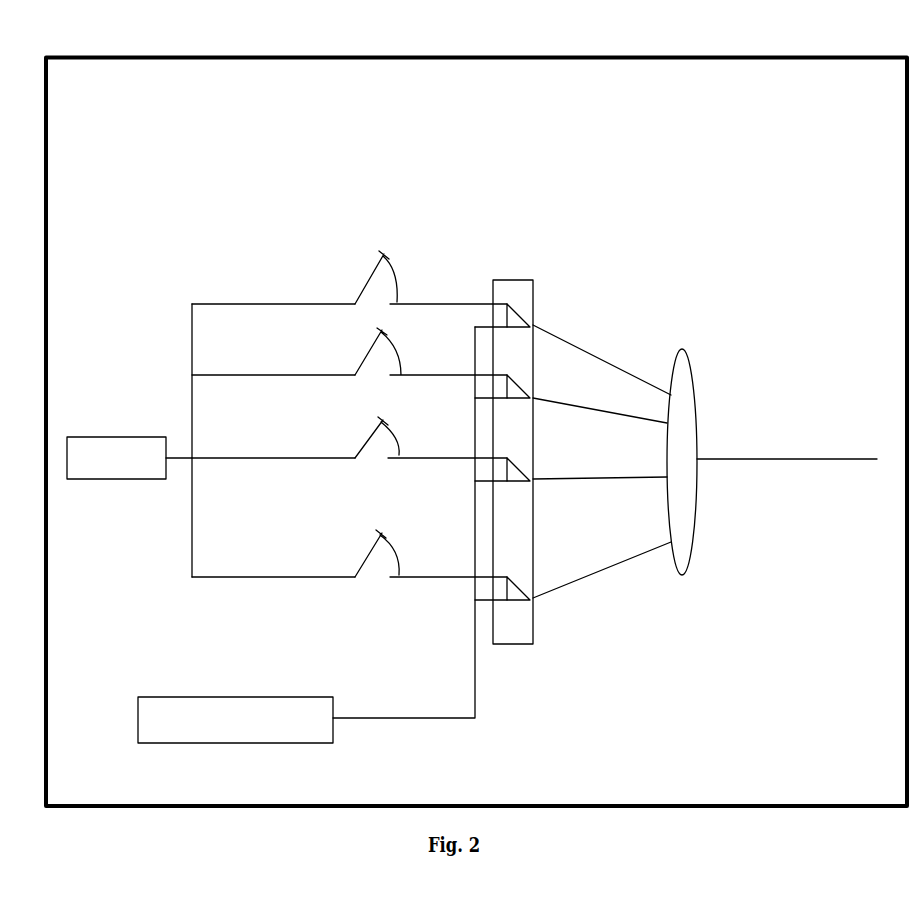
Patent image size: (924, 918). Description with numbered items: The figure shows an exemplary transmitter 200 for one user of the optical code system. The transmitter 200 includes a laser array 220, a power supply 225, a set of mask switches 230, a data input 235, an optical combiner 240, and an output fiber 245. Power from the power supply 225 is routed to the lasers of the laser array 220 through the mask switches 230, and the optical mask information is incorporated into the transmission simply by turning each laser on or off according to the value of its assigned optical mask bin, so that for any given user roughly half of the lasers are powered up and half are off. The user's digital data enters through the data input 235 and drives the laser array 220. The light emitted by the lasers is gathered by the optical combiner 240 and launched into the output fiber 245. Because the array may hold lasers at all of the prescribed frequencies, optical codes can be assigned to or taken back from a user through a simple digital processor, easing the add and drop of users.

The transmitter 200 is at (251, 54).
The laser array 220 is at (507, 293).
The power supply 225 is at (129, 434).
The mask switches 230 is at (383, 248).
The data input 235 is at (306, 535).
The optical combiner 240 is at (682, 327).
The output fiber 245 is at (787, 456).